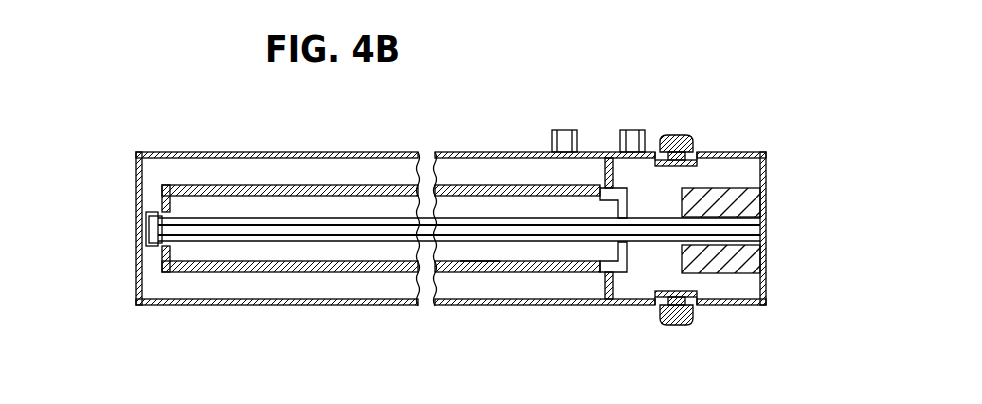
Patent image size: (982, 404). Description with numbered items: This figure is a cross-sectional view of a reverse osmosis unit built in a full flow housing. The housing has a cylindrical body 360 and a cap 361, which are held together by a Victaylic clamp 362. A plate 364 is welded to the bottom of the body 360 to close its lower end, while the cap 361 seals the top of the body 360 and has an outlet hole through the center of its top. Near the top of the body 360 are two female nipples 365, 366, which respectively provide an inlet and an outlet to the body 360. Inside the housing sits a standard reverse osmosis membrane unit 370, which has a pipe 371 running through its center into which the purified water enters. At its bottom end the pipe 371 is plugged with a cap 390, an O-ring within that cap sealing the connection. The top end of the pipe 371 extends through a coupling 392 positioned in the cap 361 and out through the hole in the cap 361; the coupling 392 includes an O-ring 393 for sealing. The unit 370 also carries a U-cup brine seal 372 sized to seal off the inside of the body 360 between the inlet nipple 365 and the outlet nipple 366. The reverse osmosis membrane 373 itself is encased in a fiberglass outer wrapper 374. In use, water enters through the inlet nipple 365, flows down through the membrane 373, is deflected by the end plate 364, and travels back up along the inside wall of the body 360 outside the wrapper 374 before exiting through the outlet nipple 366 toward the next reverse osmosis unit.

The body 360 is at (276, 150).
The cap 361 is at (733, 149).
The Victaylic clamp 362 is at (673, 131).
The plate 364 is at (135, 293).
The female nipple 365 is at (627, 121).
The female nipple 366 is at (562, 124).
The reverse osmosis membrane unit 370 is at (253, 273).
The pipe 371 is at (347, 241).
The U-cup brine seal 372 is at (616, 290).
The reverse osmosis membrane 373 is at (475, 255).
The fiberglass outer wrapper 374 is at (512, 262).
The cap 390 is at (139, 205).
The coupling 392 is at (723, 265).
The O-ring 393 is at (695, 214).